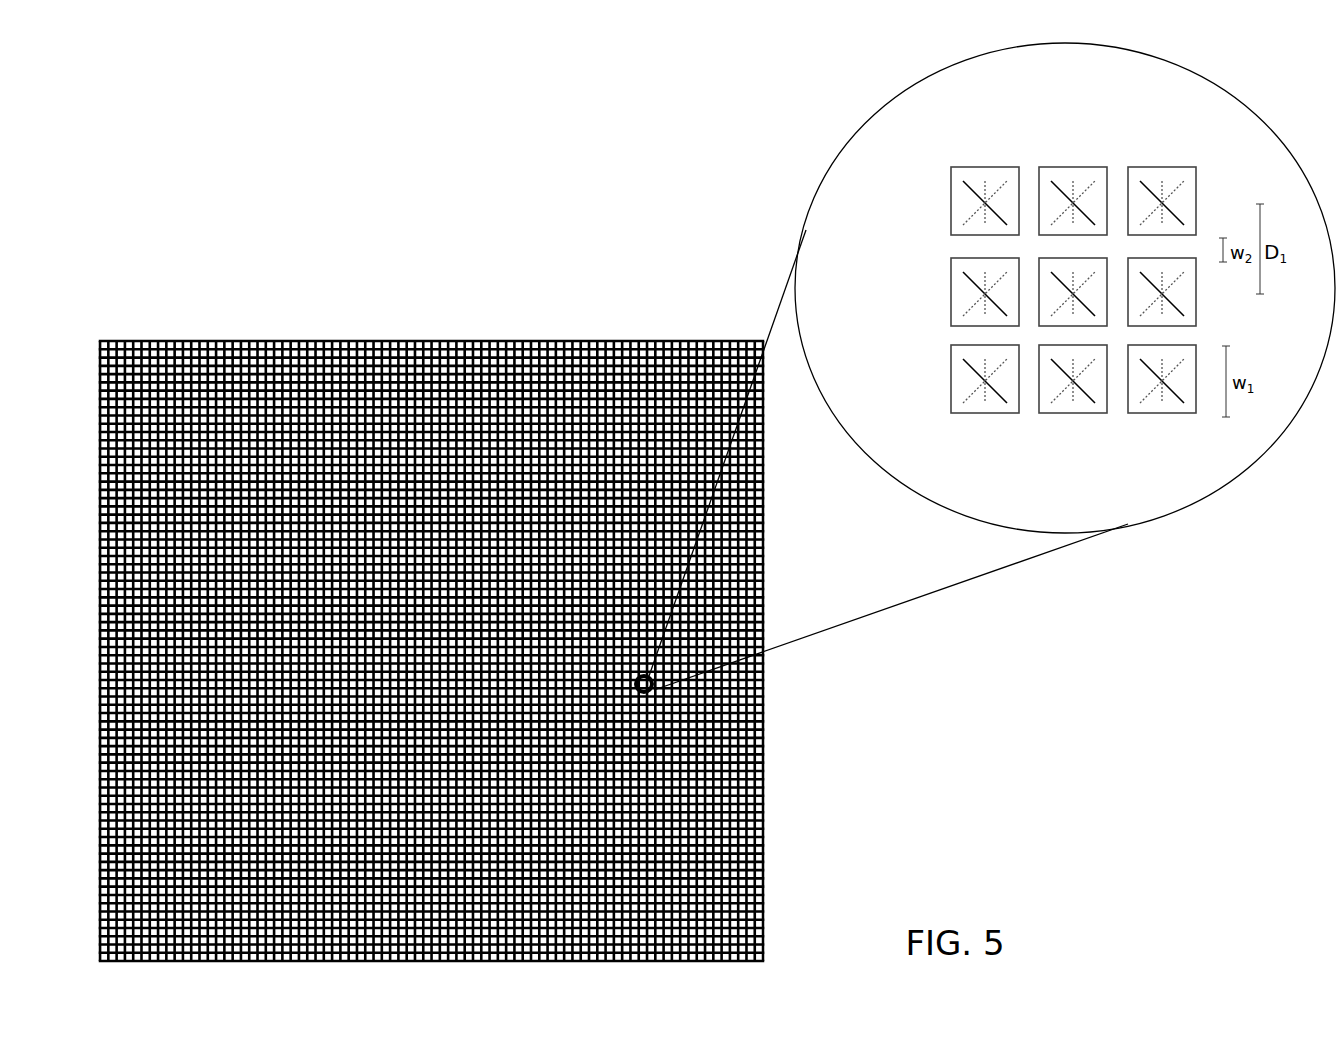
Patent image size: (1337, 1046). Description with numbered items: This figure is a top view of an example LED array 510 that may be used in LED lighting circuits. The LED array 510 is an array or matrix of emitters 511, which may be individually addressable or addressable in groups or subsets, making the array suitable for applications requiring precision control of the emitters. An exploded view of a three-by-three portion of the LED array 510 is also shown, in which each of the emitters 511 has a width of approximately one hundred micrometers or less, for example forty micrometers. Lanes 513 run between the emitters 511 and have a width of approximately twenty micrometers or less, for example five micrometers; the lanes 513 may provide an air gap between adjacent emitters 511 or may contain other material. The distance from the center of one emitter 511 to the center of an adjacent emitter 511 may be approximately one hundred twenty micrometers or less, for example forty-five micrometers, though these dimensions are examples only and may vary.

The LED array 510 is at (381, 304).
The emitters 511 is at (1086, 184).
The lanes 513 is at (982, 338).